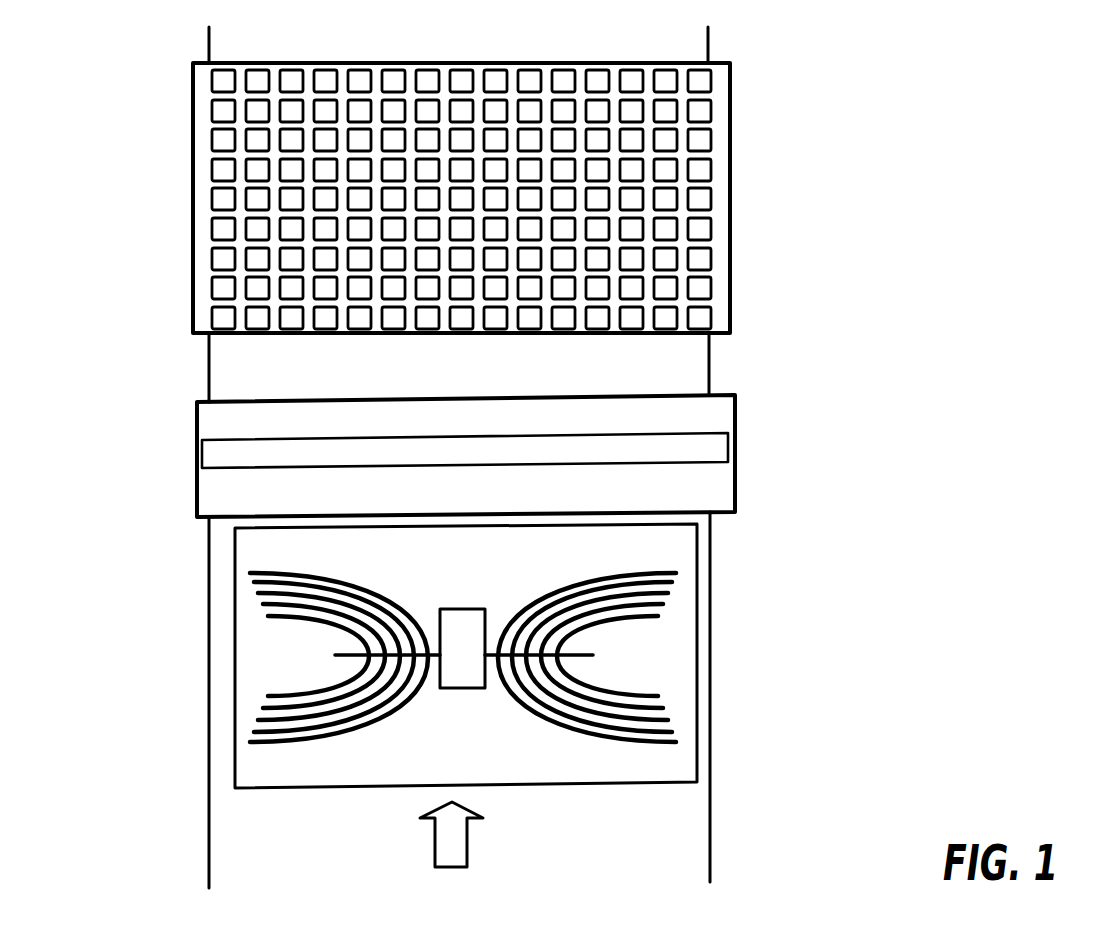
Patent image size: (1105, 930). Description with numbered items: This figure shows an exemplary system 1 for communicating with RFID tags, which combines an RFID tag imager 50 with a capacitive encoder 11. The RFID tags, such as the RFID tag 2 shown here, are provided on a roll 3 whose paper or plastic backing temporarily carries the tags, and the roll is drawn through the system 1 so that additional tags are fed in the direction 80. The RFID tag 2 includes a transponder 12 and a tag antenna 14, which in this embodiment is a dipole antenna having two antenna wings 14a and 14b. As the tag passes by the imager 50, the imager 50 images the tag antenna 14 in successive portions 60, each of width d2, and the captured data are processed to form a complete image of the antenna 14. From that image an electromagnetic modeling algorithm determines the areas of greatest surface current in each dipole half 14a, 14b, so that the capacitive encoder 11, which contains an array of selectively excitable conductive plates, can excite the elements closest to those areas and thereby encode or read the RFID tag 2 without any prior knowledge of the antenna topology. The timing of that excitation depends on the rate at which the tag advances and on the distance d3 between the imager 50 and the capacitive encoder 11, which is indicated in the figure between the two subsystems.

The system 1 is at (834, 216).
The capacitive encoder 11 is at (731, 200).
The RFID tag imager 50 is at (737, 455).
The successive portions 60 is at (478, 436).
The distance between imager subsystem and capacitive encoder d3 is at (188, 343).
The width of imaged portions d2 is at (188, 441).
The roll 3 is at (713, 650).
The RFID tag 2 is at (463, 646).
The transponder 12 is at (466, 609).
The tag antenna 14 is at (463, 650).
The antenna wing 14a is at (605, 573).
The antenna wing 14b is at (300, 572).
The feed direction 80 is at (478, 838).